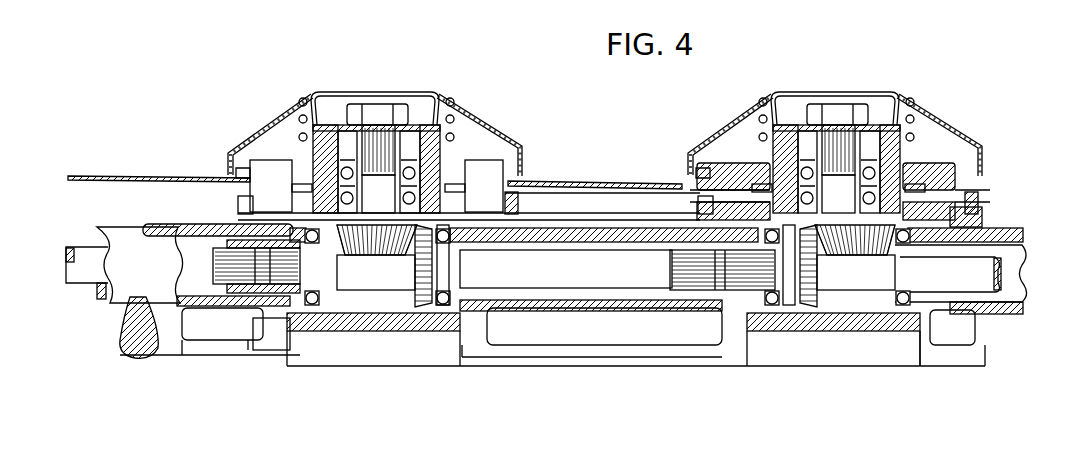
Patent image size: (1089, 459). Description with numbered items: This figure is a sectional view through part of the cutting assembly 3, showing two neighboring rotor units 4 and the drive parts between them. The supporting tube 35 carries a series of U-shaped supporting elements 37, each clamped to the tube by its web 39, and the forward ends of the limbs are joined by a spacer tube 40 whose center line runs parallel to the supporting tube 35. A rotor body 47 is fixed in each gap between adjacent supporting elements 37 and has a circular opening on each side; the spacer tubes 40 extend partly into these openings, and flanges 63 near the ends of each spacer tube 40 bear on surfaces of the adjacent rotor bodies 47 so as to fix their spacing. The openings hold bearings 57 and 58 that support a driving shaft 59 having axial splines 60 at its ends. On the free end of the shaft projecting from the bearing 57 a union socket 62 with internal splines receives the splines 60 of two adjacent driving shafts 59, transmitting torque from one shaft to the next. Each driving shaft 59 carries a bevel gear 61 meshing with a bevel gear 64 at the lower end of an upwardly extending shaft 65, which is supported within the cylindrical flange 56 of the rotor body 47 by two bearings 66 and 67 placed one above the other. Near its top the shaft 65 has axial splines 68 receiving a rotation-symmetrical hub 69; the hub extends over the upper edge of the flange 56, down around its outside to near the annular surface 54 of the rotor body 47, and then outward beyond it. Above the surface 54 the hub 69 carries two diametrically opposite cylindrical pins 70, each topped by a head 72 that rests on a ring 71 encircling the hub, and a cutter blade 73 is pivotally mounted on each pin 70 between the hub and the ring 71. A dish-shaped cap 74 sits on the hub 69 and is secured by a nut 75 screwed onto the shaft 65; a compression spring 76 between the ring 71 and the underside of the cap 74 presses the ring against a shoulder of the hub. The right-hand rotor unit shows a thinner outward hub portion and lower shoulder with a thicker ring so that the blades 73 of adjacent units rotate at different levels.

The cutting assembly 3 is at (554, 362).
The rotor unit 4 is at (532, 140).
The supporting tube 35 is at (170, 354).
The supporting element 37 is at (202, 345).
The web 39 is at (210, 357).
The spacer tube 40 is at (118, 232).
The rotor body 47 is at (328, 333).
The surface 54 is at (490, 247).
The cylindrical flange 56 is at (490, 118).
The bearing 57 is at (322, 300).
The bearing 58 is at (435, 333).
The driving shaft 59 is at (100, 274).
The axial splines 60 is at (200, 276).
The bevel gear 61 is at (440, 281).
The union socket 62 is at (240, 296).
The flange 63 is at (214, 354).
The bevel gear 64 is at (616, 266).
The upwardly extending shaft 65 is at (380, 172).
The bearing 66 is at (410, 168).
The bearing 67 is at (608, 194).
The axial splines 68 is at (378, 140).
The hub 69 is at (333, 128).
The pin 70 is at (262, 192).
The ring 71 is at (229, 165).
The head 72 is at (260, 158).
The cutter blade 73 is at (100, 168).
The cap 74 is at (262, 124).
The nut 75 is at (355, 103).
The compression spring 76 is at (466, 110).